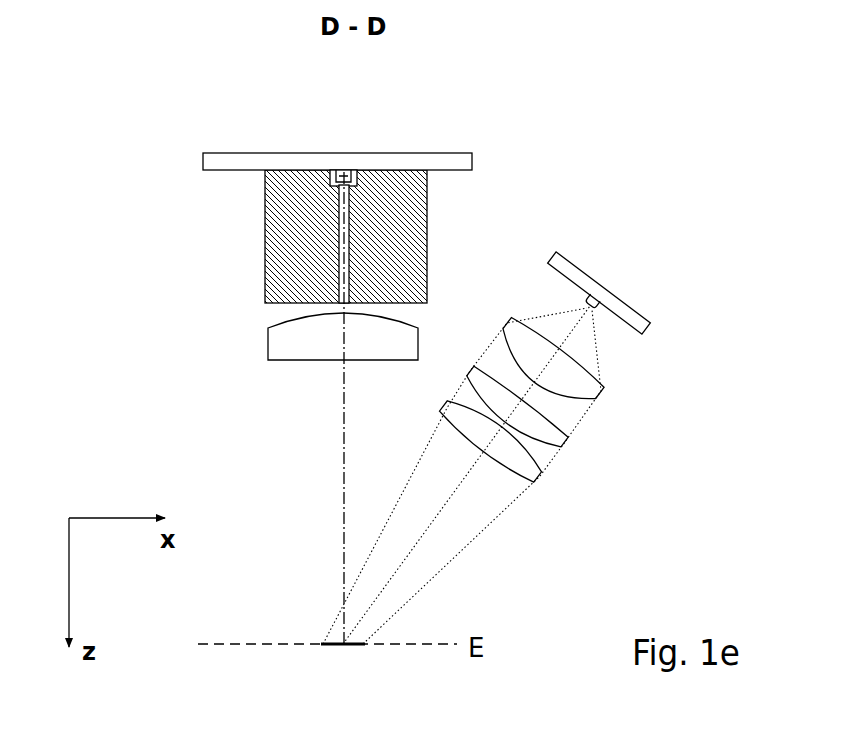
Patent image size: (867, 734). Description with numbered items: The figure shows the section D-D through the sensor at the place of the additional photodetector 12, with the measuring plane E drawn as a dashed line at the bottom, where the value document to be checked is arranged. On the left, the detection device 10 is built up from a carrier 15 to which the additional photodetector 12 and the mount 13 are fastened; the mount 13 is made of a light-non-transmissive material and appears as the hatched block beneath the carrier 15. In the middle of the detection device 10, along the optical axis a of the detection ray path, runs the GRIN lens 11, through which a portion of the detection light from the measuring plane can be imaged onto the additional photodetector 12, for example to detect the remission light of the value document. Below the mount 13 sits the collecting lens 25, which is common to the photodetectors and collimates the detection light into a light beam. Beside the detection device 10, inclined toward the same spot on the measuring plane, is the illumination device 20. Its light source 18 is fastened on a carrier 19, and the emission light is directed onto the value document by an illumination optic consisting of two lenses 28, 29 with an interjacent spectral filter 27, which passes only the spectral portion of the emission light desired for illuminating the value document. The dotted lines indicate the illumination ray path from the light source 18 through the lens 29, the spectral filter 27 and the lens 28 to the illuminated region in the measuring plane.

The detection device 10 is at (190, 134).
The GRIN lens 11 is at (350, 194).
The additional photodetector 12 is at (341, 172).
The mount 13 is at (265, 206).
The carrier 15 is at (210, 153).
The light source 18 is at (591, 303).
The carrier 19 is at (640, 327).
The illumination device 20 is at (682, 323).
The collecting lens 25 is at (416, 343).
The spectral filter 27 is at (568, 440).
The lens 28 is at (541, 478).
The lens 29 is at (601, 391).
The optical axis a is at (344, 483).